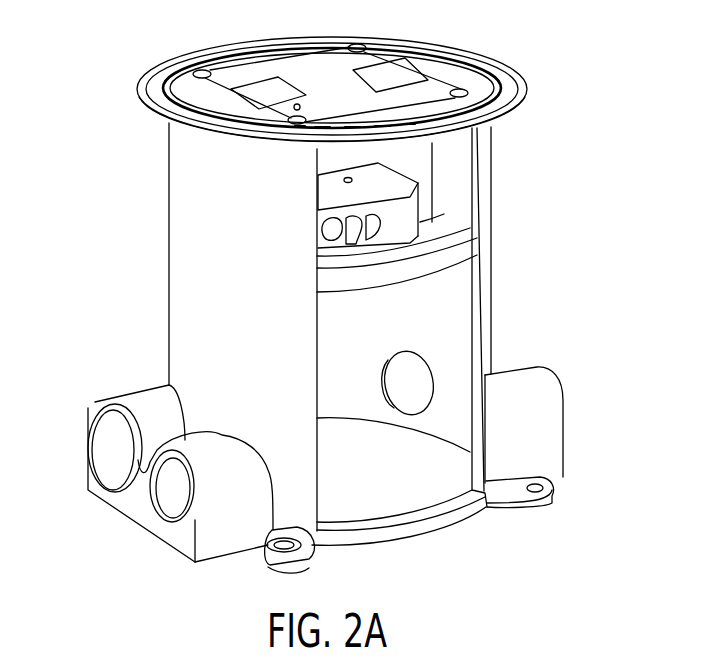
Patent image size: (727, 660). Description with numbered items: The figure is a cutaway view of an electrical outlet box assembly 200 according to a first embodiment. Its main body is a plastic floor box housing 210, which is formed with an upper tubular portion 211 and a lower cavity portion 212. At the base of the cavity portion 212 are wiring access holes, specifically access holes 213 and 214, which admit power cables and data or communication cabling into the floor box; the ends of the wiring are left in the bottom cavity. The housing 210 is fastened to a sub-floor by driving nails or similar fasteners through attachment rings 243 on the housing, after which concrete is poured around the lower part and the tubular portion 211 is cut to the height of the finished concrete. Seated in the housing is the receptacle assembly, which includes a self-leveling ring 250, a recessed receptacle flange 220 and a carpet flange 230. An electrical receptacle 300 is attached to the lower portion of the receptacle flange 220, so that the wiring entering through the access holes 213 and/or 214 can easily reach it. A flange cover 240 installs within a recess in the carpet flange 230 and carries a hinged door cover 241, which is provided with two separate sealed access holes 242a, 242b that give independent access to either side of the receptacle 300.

The electrical outlet box assembly 200 is at (134, 145).
The plastic floor box housing 210 is at (483, 324).
The upper tubular portion 211 is at (188, 268).
The lower cavity portion 212 is at (428, 311).
The access hole 213 is at (105, 440).
The access hole 214 is at (415, 386).
The recessed receptacle flange 220 is at (420, 172).
The carpet flange 230 is at (503, 86).
The flange cover 240 is at (450, 62).
The hinged door cover 241 is at (302, 75).
The sealed access hole 242a is at (393, 70).
The sealed access hole 242b is at (262, 92).
The attachment ring 243 is at (297, 561).
The self-leveling ring 250 is at (440, 262).
The electrical receptacle 300 is at (400, 213).